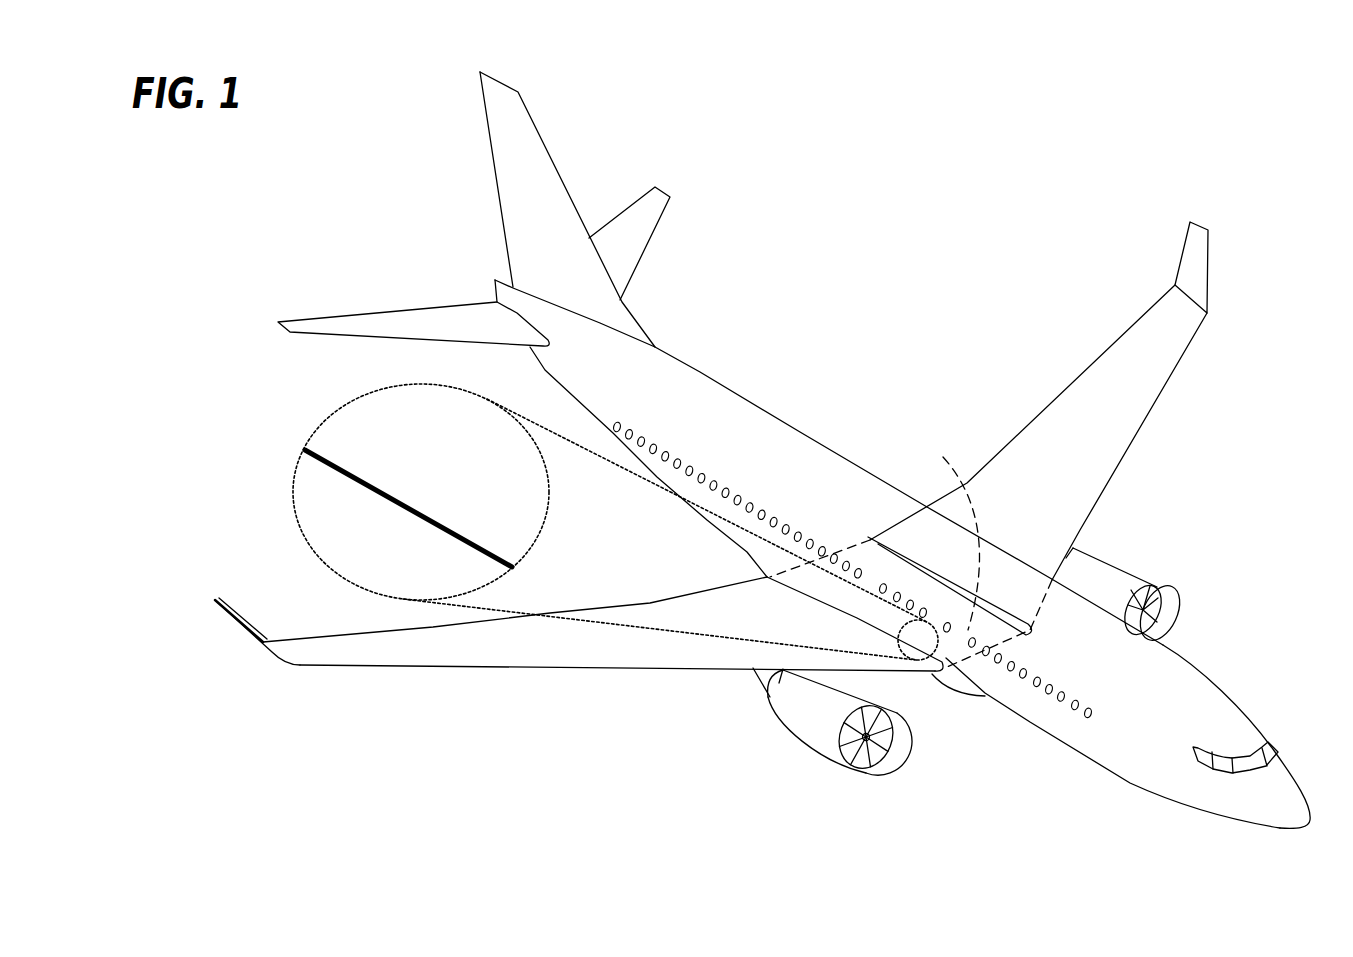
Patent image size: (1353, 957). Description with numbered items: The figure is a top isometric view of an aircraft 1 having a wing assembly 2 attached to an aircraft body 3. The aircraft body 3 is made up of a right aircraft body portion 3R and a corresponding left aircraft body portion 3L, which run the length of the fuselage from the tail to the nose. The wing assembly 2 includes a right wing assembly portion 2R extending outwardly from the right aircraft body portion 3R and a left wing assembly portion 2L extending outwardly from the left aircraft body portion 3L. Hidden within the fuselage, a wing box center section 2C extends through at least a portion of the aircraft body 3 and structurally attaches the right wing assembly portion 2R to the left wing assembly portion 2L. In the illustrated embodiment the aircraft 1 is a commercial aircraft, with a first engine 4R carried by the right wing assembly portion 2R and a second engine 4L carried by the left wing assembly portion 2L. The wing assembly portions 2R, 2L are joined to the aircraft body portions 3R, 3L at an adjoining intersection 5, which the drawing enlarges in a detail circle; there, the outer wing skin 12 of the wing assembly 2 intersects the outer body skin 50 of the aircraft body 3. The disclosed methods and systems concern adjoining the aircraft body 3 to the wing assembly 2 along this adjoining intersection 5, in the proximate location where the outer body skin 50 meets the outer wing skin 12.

The aircraft 1 is at (336, 206).
The wing assembly 2 is at (447, 655).
The right wing assembly portion 2R is at (580, 667).
The left wing assembly portion 2L is at (1150, 413).
The wing box center section 2C is at (911, 553).
The aircraft body 3 is at (892, 554).
The right aircraft body portion 3R is at (1087, 753).
The left aircraft body portion 3L is at (1220, 682).
The first engine 4R is at (833, 760).
The second engine 4L is at (1143, 582).
The adjoining intersection 5 is at (363, 480).
The outer wing skin 12 is at (322, 530).
The outer body skin 50 is at (430, 477).